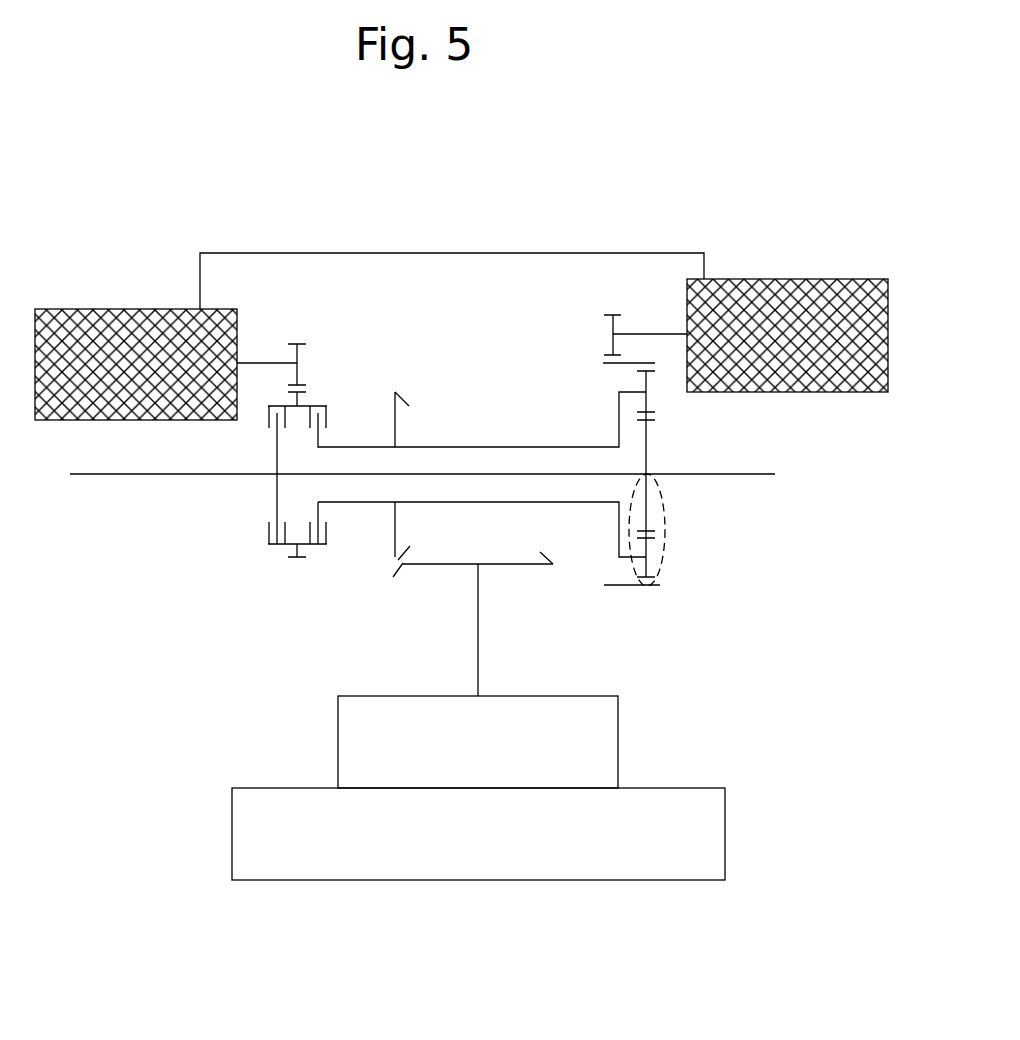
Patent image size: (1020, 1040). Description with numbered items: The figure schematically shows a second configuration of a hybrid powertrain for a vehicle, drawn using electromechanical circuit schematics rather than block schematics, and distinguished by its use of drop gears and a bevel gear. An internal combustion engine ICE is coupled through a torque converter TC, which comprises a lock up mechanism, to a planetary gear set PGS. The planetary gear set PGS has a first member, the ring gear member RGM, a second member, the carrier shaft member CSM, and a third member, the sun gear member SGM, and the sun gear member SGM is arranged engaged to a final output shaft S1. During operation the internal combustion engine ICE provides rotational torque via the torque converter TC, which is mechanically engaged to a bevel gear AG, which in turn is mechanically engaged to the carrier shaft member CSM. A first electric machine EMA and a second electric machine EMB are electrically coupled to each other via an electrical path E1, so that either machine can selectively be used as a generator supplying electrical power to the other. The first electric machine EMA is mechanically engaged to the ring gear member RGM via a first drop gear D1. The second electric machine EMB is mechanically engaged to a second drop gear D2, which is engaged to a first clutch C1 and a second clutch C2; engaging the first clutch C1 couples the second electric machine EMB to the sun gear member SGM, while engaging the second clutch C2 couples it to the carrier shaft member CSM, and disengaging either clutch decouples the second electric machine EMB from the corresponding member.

The electrical path E1 is at (428, 253).
The second electric machine EMB is at (135, 309).
The first electric machine EMA is at (790, 279).
The first drop gear D1 is at (600, 356).
The second drop gear D2 is at (310, 390).
The final output shaft S1 is at (98, 474).
The first clutch C1 is at (273, 547).
The second clutch C2 is at (318, 547).
The bevel gear AG is at (397, 568).
The third member (sun gear member) SGM is at (648, 480).
The second member (carrier shaft member) CSM is at (648, 540).
The first member (ring gear member) RGM is at (648, 586).
The planetary gear set PGS is at (637, 588).
The torque converter TC is at (462, 756).
The internal combustion engine ICE is at (457, 848).